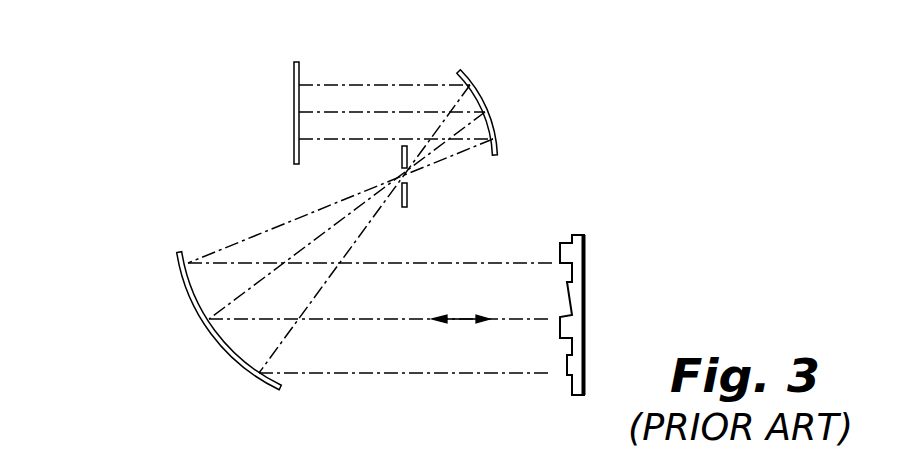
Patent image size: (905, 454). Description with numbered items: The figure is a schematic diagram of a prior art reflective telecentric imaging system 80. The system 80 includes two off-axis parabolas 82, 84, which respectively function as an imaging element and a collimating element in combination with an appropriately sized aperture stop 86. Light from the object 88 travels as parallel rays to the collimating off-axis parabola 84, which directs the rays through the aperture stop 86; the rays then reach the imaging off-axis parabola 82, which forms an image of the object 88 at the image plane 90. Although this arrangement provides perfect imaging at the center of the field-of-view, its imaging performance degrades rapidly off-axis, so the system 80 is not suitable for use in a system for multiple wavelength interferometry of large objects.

The prior art reflective telecentric imaging system 80 is at (157, 158).
The off-axis parabola 82 is at (502, 138).
The off-axis parabola 84 is at (187, 285).
The aperture stop 86 is at (407, 190).
The object 88 is at (587, 308).
The image plane 90 is at (294, 73).